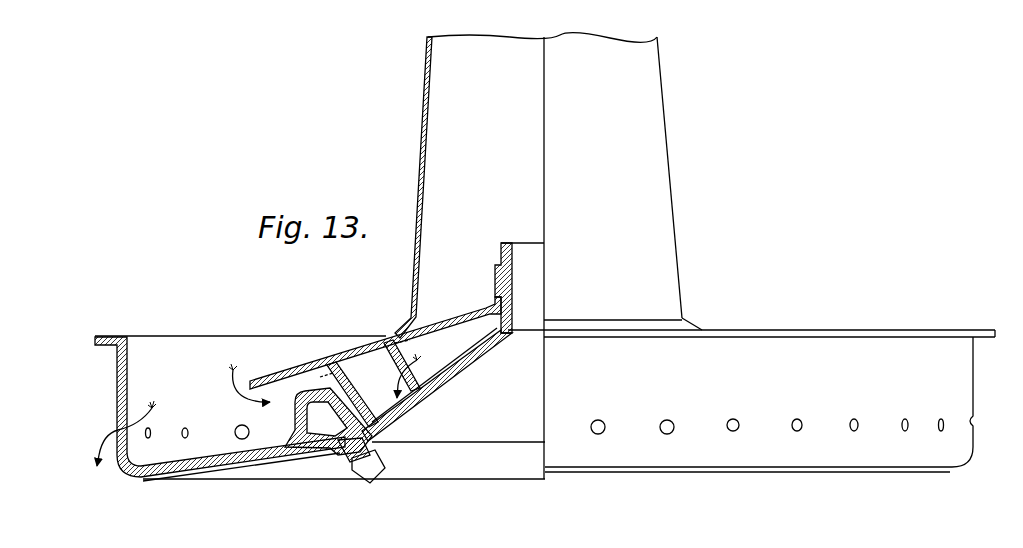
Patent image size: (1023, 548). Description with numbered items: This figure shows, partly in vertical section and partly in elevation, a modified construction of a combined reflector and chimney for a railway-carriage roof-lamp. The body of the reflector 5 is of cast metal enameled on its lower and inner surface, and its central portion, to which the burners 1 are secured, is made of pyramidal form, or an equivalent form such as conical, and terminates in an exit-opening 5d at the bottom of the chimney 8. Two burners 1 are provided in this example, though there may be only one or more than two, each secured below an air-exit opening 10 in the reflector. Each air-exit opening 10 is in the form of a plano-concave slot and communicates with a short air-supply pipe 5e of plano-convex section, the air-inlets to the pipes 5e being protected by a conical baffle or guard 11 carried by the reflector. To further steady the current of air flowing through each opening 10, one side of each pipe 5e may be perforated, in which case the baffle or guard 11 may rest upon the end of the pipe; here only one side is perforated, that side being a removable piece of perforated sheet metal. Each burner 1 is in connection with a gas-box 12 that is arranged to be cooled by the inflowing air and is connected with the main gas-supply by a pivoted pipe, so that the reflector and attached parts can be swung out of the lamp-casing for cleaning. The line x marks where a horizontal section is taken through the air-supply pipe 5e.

The chimney 8 is at (548, 256).
The trough 5 is at (545, 405).
The exit-opening 5d is at (519, 288).
The air-supply pipe 5e is at (373, 383).
The conical baffle or guard 11 is at (305, 364).
The air-exit opening 10 is at (397, 416).
The gas-box 12 is at (322, 415).
The burner 1 is at (383, 459).
The section line x is at (360, 362).